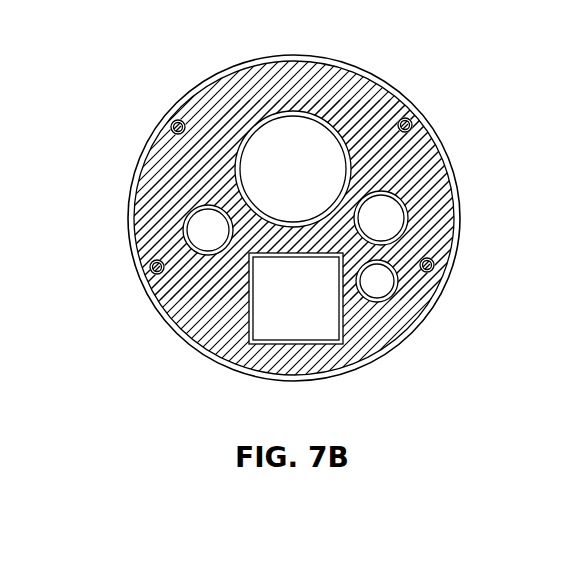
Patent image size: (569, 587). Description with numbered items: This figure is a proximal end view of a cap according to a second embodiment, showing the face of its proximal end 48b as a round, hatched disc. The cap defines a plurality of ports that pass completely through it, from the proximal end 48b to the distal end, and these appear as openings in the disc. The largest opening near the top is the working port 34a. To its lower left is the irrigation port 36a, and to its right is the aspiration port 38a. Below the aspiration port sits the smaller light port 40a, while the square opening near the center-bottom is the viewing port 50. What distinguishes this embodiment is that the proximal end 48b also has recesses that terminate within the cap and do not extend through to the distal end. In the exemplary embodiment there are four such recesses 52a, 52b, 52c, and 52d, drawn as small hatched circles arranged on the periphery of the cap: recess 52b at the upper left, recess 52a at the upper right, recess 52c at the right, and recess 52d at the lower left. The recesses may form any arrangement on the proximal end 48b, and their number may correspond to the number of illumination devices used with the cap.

The proximal end 48b is at (171, 80).
The working port 34a is at (292, 132).
The irrigation port 36a is at (206, 235).
The aspiration port 38a is at (438, 200).
The light port 40a is at (397, 290).
The viewing port 50 is at (277, 327).
The recess 52a is at (412, 123).
The recess 52b is at (172, 122).
The recess 52c is at (436, 276).
The recess 52d is at (153, 269).